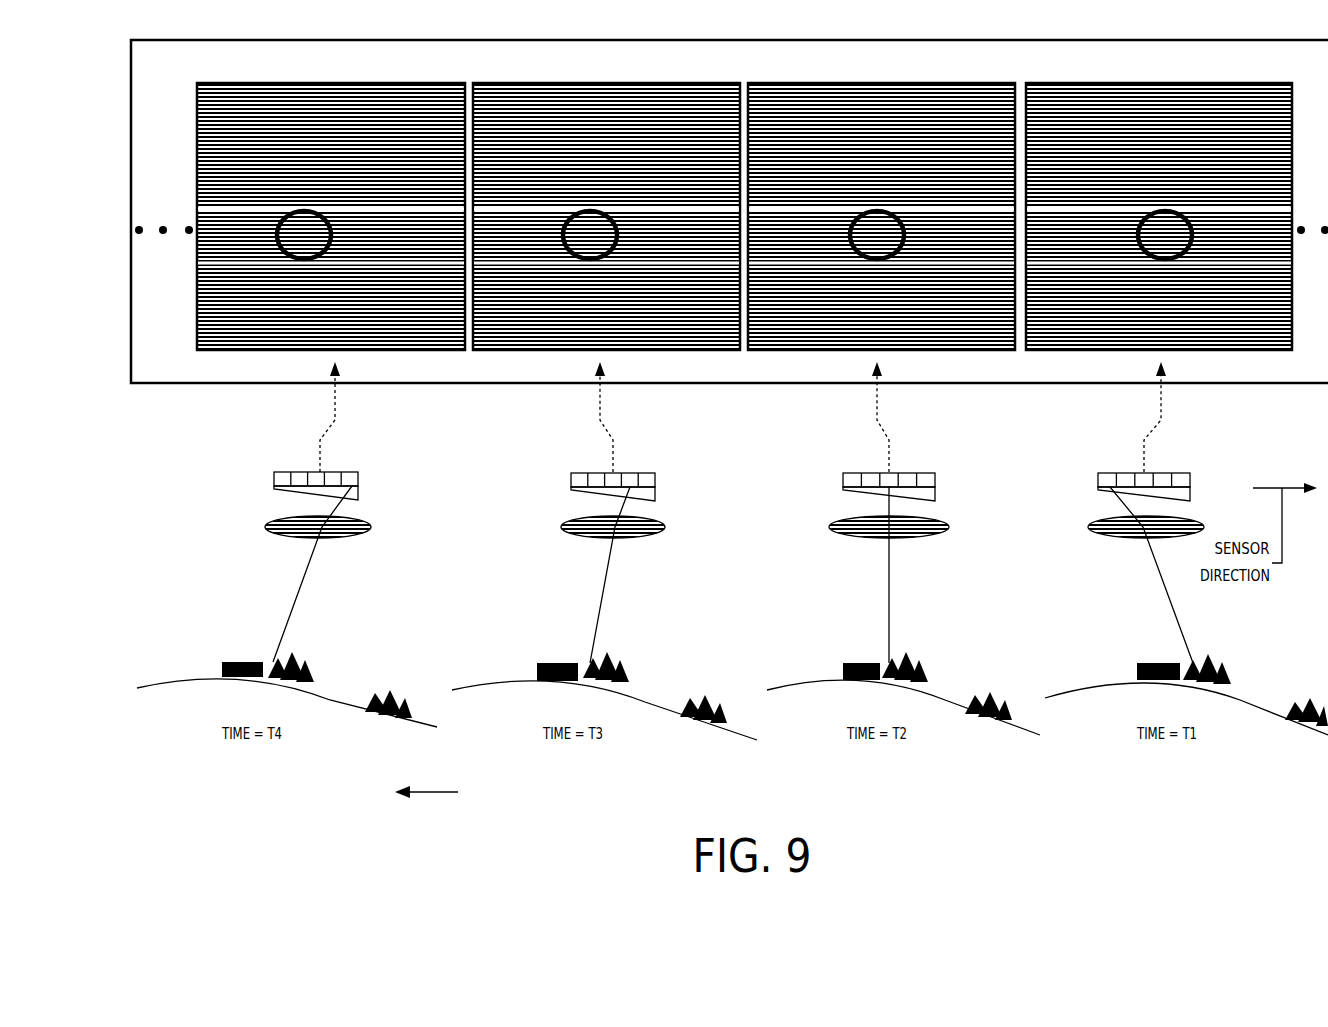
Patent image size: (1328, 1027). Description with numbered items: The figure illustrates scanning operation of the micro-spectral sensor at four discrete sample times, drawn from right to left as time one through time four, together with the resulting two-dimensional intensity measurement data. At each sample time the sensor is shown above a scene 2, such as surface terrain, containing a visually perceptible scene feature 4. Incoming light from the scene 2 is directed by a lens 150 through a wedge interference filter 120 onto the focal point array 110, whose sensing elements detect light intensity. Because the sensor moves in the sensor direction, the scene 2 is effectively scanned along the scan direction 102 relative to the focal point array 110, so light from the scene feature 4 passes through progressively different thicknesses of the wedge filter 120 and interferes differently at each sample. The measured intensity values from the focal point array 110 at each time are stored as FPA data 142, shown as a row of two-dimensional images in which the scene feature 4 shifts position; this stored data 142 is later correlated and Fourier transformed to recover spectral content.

The FPA data 142 is at (748, 40).
The focal point array 110 is at (711, 482).
The wedge interference filter 120 is at (753, 491).
The lens 150 is at (729, 538).
The scene 2 is at (732, 672).
The scene feature 4 is at (705, 691).
The scan direction 102 is at (446, 792).